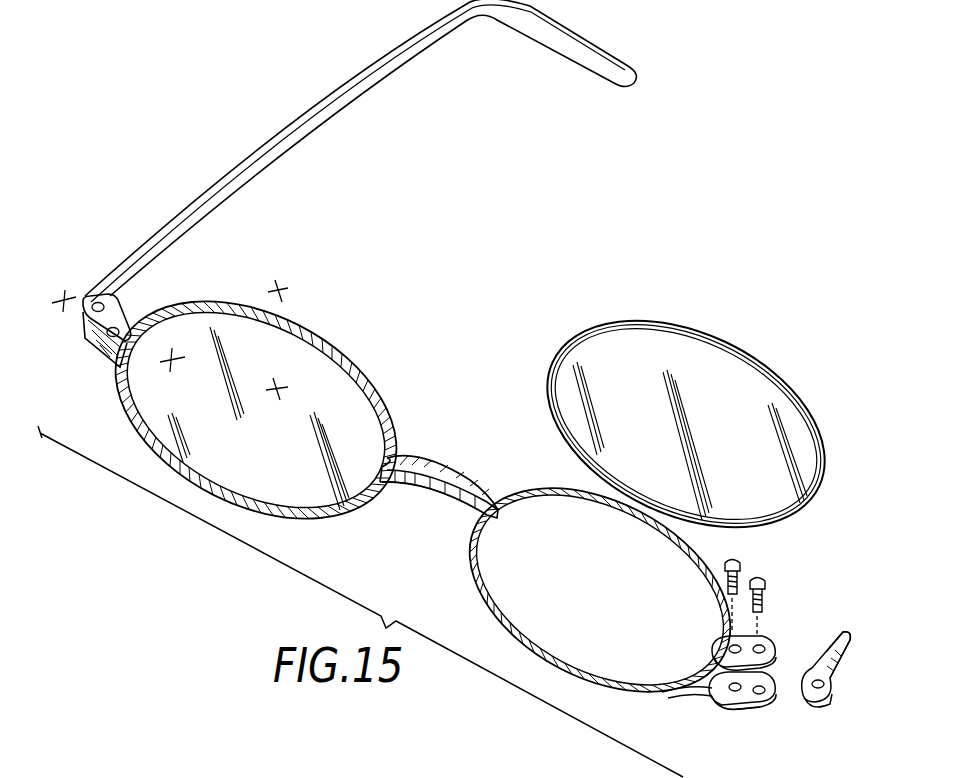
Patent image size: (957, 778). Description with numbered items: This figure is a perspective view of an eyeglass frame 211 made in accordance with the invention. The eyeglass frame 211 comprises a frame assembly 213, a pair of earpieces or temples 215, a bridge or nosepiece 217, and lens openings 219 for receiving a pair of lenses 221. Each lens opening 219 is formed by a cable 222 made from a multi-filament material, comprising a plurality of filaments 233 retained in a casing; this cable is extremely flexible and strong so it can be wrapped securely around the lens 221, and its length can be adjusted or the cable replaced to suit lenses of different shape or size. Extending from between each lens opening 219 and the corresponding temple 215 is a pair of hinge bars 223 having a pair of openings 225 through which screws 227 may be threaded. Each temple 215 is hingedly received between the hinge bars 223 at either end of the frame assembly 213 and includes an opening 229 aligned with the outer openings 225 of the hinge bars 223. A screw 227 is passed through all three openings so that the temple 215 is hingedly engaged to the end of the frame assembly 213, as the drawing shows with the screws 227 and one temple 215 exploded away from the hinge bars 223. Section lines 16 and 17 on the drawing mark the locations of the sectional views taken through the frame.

The temple 215 is at (272, 156).
The lens opening 219 is at (182, 300).
The eyeglass frame 211 is at (373, 372).
The section line 16 is at (286, 293).
The section line 17 is at (67, 308).
The frame assembly 213 is at (419, 458).
The bridge 217 is at (433, 488).
The lens 221 is at (583, 366).
The cable 222 is at (475, 592).
The screw 227 is at (763, 576).
The opening 225 is at (773, 645).
The opening 229 is at (833, 680).
The hinge bar 223 is at (740, 704).
The filament 233 is at (206, 771).